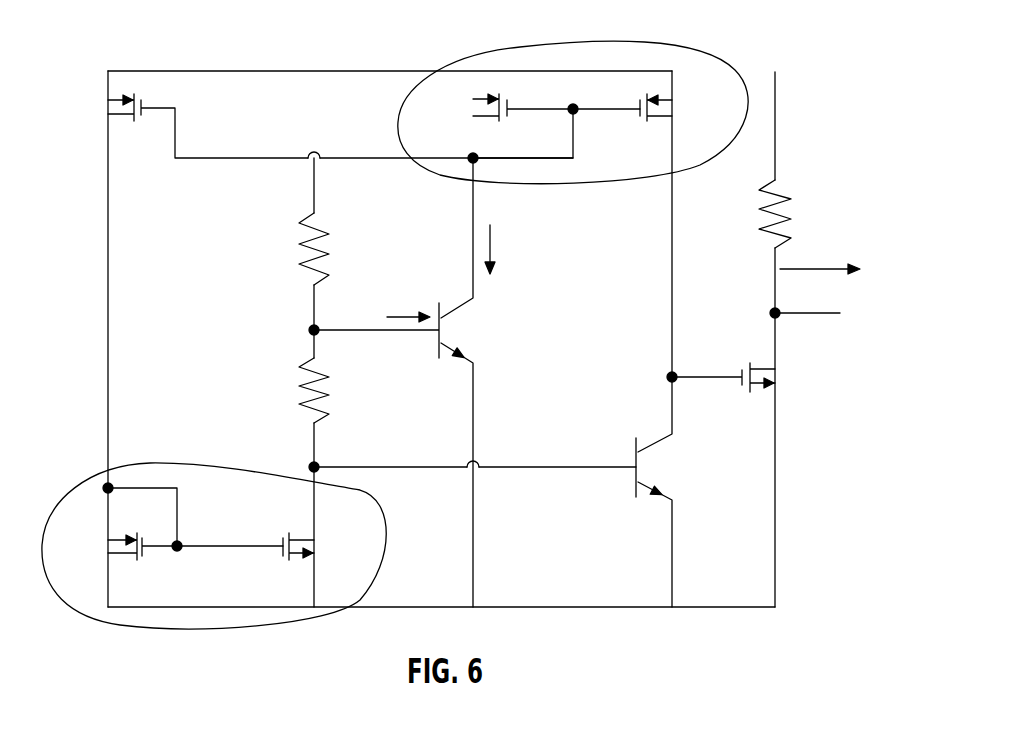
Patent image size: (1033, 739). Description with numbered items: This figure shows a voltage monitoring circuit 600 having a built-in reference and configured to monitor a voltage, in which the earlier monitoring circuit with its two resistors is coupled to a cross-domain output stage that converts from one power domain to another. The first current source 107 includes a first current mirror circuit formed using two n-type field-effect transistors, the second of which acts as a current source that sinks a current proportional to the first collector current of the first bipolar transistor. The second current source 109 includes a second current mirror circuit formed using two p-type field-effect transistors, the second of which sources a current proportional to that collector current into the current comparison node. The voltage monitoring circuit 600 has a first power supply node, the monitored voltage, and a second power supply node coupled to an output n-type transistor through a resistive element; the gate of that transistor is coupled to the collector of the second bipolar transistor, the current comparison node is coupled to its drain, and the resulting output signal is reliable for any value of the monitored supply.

The voltage monitoring circuit 600 is at (167, 28).
The first current source 107 is at (158, 463).
The second current source 109 is at (658, 40).